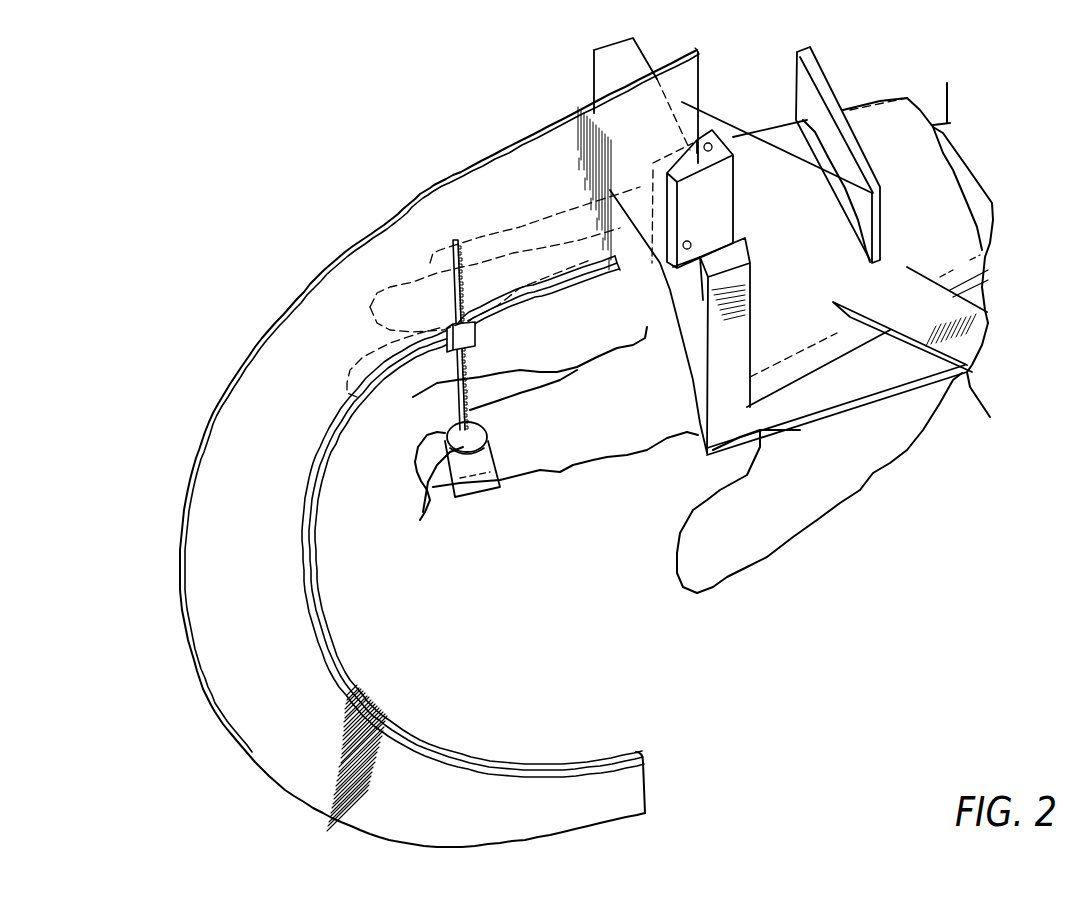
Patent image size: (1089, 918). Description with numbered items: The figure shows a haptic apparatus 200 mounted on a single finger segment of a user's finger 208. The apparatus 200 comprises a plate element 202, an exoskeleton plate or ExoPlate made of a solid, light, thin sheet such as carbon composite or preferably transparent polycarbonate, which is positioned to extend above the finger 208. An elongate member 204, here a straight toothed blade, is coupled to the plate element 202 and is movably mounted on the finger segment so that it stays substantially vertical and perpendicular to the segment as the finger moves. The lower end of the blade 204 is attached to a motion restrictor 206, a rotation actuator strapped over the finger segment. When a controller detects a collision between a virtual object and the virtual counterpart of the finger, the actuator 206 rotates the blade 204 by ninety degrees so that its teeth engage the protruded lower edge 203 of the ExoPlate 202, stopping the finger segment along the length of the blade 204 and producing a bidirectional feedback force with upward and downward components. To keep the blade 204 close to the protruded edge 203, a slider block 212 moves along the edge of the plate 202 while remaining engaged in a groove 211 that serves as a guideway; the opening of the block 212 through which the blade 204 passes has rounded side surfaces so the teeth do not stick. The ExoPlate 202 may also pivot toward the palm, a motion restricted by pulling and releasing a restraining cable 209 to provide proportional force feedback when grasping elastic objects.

The haptic apparatus 200 is at (193, 197).
The plate element 202 is at (250, 713).
The protruded edge 203 is at (492, 312).
The elongate member 204 is at (455, 242).
The motion restrictor 206 is at (424, 508).
The finger 208 is at (597, 443).
The restraining cable 209 is at (773, 147).
The groove 211 is at (332, 435).
The slider block 212 is at (447, 338).